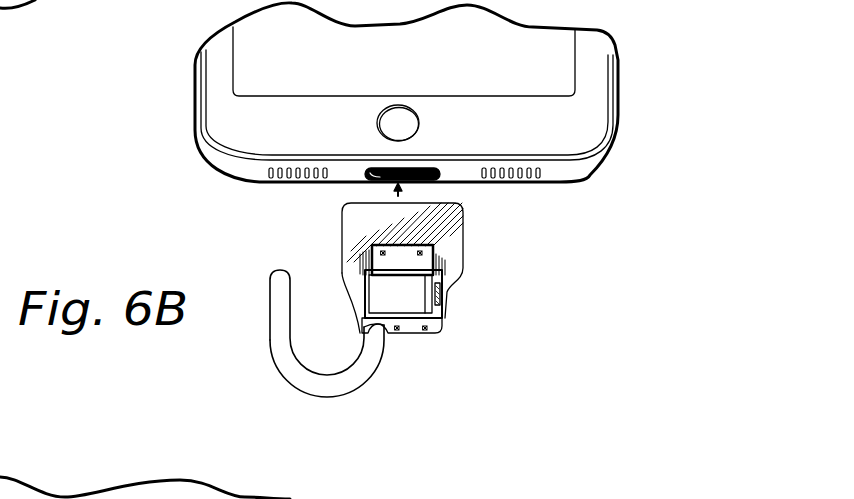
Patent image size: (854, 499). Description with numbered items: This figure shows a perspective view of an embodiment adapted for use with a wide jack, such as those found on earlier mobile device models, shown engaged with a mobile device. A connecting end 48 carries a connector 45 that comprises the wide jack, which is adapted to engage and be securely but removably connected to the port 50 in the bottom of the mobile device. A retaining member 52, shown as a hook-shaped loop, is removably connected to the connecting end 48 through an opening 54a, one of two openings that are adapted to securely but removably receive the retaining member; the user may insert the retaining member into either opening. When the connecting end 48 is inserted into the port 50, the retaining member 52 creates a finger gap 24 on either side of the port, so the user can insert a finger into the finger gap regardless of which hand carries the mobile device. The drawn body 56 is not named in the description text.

The finger gap 24 is at (84, 0).
The connector 45 is at (428, 250).
The connecting end 48 is at (428, 303).
The port 50 is at (418, 181).
The retaining member 52 is at (328, 380).
The opening 54a is at (357, 330).
The attachment body 56 is at (352, 215).